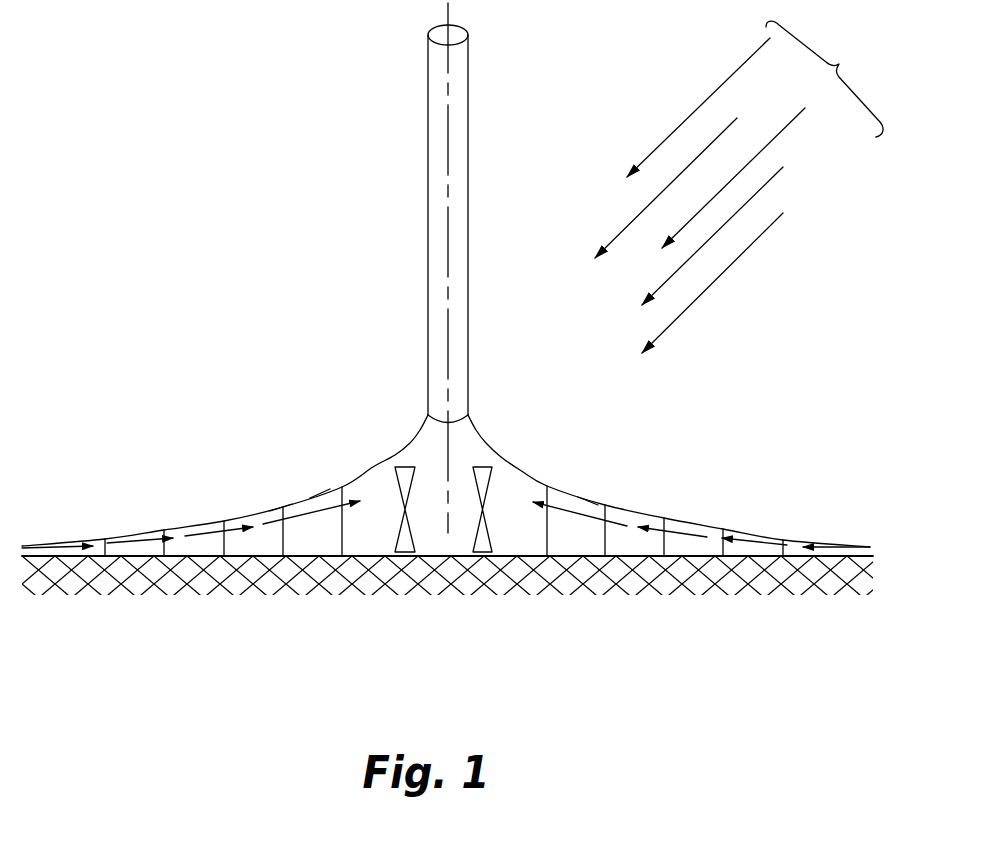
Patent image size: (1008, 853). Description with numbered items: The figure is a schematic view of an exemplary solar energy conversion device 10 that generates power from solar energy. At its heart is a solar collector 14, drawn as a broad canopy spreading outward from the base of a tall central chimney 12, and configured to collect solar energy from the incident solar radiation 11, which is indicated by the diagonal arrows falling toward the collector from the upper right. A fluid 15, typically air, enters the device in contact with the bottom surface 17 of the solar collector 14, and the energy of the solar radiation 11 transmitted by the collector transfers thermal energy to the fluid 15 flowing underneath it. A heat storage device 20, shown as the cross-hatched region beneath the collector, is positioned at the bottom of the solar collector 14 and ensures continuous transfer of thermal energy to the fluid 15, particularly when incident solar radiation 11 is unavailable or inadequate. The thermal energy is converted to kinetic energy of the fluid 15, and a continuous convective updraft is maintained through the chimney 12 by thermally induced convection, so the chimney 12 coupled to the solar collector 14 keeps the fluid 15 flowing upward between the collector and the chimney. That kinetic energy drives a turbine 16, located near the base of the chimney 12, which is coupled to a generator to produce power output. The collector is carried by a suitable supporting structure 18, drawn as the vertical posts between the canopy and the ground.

The solar energy conversion device 10 is at (208, 82).
The solar radiation 11 is at (739, 187).
The chimney 12 is at (432, 105).
The solar collector 14 is at (530, 472).
The fluid 15 is at (207, 532).
The turbine 16 is at (412, 472).
The bottom surface 17 is at (328, 490).
The structure 18 is at (283, 505).
The heat storage device 20 is at (195, 590).